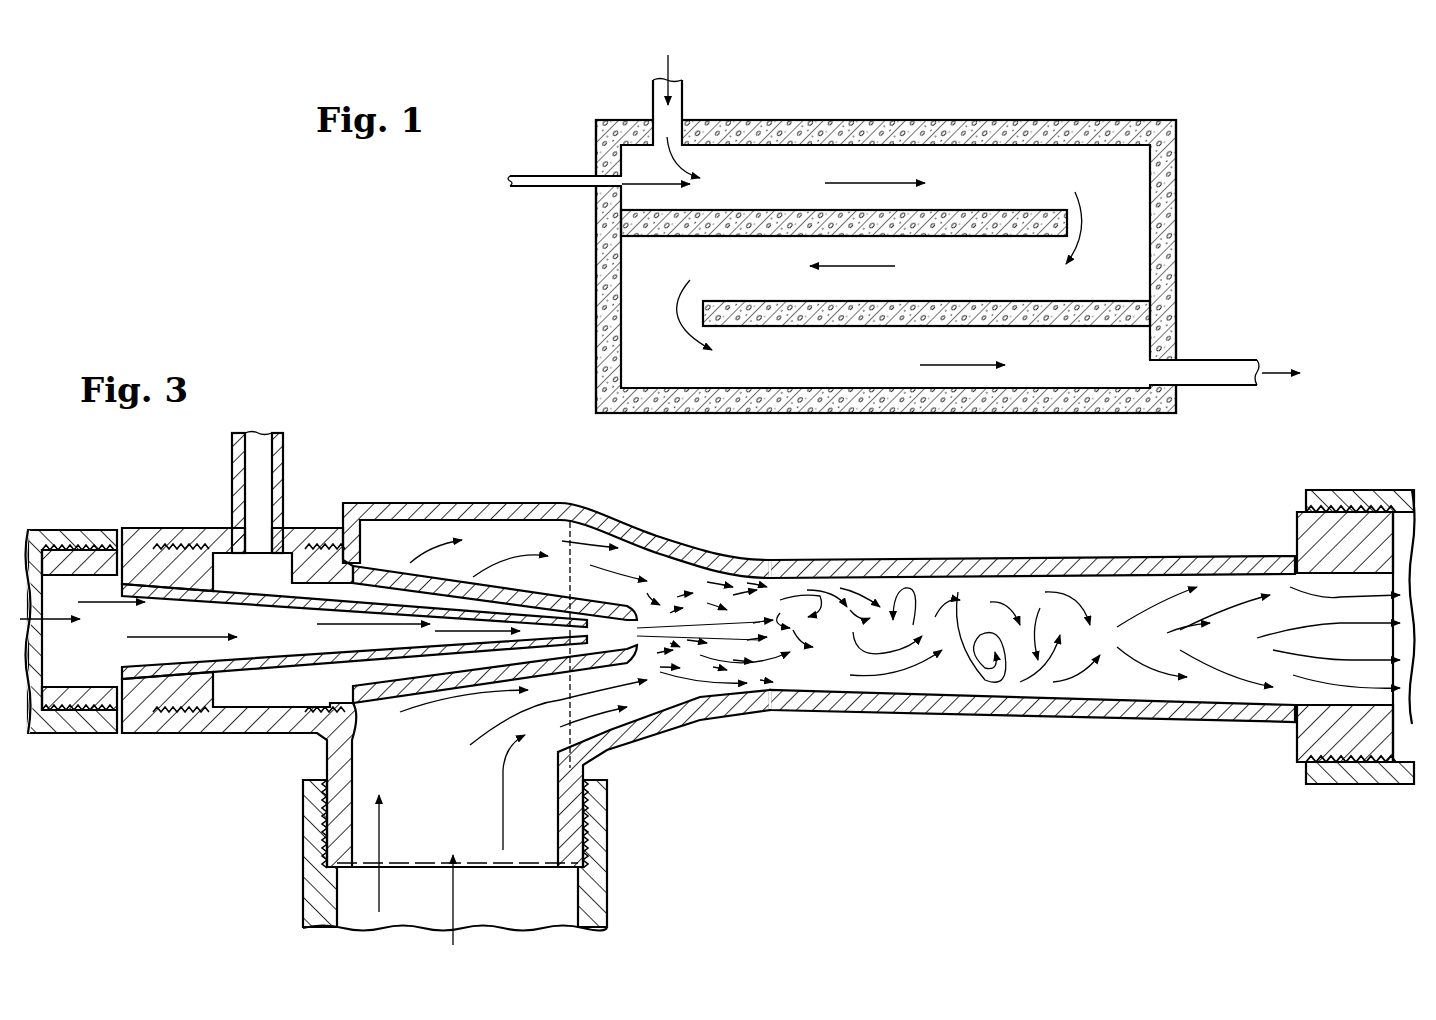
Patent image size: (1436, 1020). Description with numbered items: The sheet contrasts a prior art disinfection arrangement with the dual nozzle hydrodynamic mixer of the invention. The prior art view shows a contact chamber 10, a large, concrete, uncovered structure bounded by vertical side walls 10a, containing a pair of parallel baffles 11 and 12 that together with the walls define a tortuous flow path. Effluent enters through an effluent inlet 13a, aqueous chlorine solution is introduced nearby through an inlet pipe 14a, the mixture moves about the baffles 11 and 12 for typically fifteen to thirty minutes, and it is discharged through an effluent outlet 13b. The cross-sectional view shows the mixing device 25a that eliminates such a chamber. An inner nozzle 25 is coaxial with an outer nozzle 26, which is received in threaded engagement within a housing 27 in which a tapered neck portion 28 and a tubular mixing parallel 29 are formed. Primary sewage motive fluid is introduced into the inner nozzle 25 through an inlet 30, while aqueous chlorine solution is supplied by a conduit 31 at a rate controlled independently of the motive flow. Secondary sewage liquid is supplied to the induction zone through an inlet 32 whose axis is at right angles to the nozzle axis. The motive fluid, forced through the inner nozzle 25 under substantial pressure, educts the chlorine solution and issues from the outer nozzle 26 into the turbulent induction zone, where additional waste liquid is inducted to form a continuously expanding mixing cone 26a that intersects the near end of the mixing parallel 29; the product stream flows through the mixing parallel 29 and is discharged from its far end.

In FIG. 1, the contact chamber 10 is at (862, 116).
In FIG. 1, the insulating wall 10a is at (1081, 121).
In FIG. 1, the baffle 11 is at (984, 210).
In FIG. 1, the baffle 12 is at (966, 300).
In FIG. 1, the effluent inlet 13a is at (683, 100).
In FIG. 1, the effluent outlet 13b is at (1213, 361).
In FIG. 1, the inlet pipe 14a is at (571, 187).
In FIG. 3, the inner nozzle 25 is at (477, 658).
In FIG. 3, the mixing device 25a is at (700, 538).
In FIG. 3, the outer nozzle 26 is at (542, 672).
In FIG. 3, the mixing cone 26a is at (732, 675).
In FIG. 3, the housing 27 is at (606, 830).
In FIG. 3, the tapered neck portion 28 is at (655, 737).
In FIG. 3, the tubular mixing parallel 29 is at (932, 561).
In FIG. 3, the inlet 30 is at (70, 530).
In FIG. 3, the conduit 31 is at (284, 479).
In FIG. 3, the inlet 32 is at (303, 885).